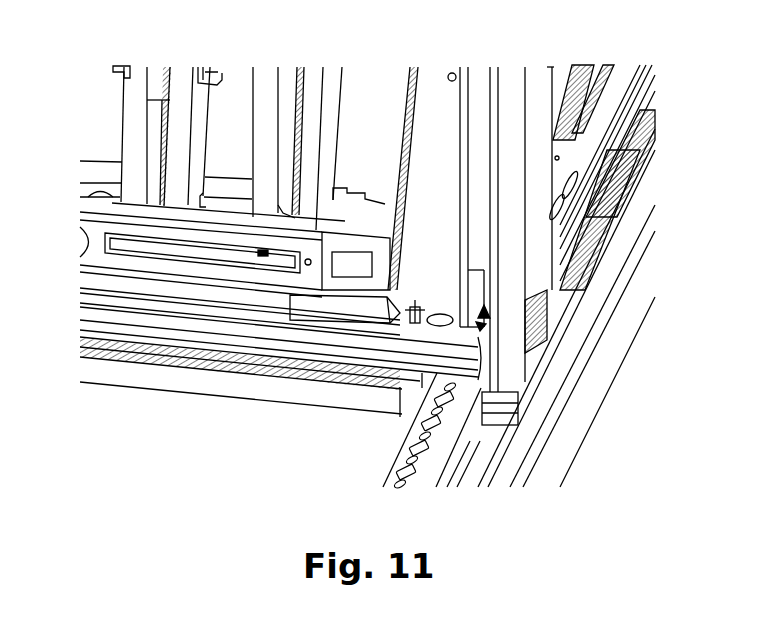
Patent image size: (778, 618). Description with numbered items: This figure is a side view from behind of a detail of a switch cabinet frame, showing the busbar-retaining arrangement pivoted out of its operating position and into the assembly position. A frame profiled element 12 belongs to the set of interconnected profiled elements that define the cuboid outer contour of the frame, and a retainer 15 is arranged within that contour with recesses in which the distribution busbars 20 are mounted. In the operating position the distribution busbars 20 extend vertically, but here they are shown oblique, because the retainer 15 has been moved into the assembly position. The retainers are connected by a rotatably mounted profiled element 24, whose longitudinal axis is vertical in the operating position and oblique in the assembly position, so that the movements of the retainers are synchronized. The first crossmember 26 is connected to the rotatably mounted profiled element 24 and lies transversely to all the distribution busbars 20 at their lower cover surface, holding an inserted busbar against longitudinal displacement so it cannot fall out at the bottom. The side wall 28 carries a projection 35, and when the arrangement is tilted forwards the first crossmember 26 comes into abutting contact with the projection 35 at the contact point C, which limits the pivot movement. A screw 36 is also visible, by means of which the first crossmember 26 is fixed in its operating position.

The frame profiled element 12 is at (460, 413).
The retainer 15 is at (92, 205).
The distribution busbar 20 is at (328, 92).
The rotatably mounted profiled element 24 is at (427, 85).
The first crossmember 26 is at (264, 391).
The side wall 28 is at (507, 83).
The projection 35 is at (473, 289).
The screw 36 is at (428, 322).
The contact point C is at (478, 325).